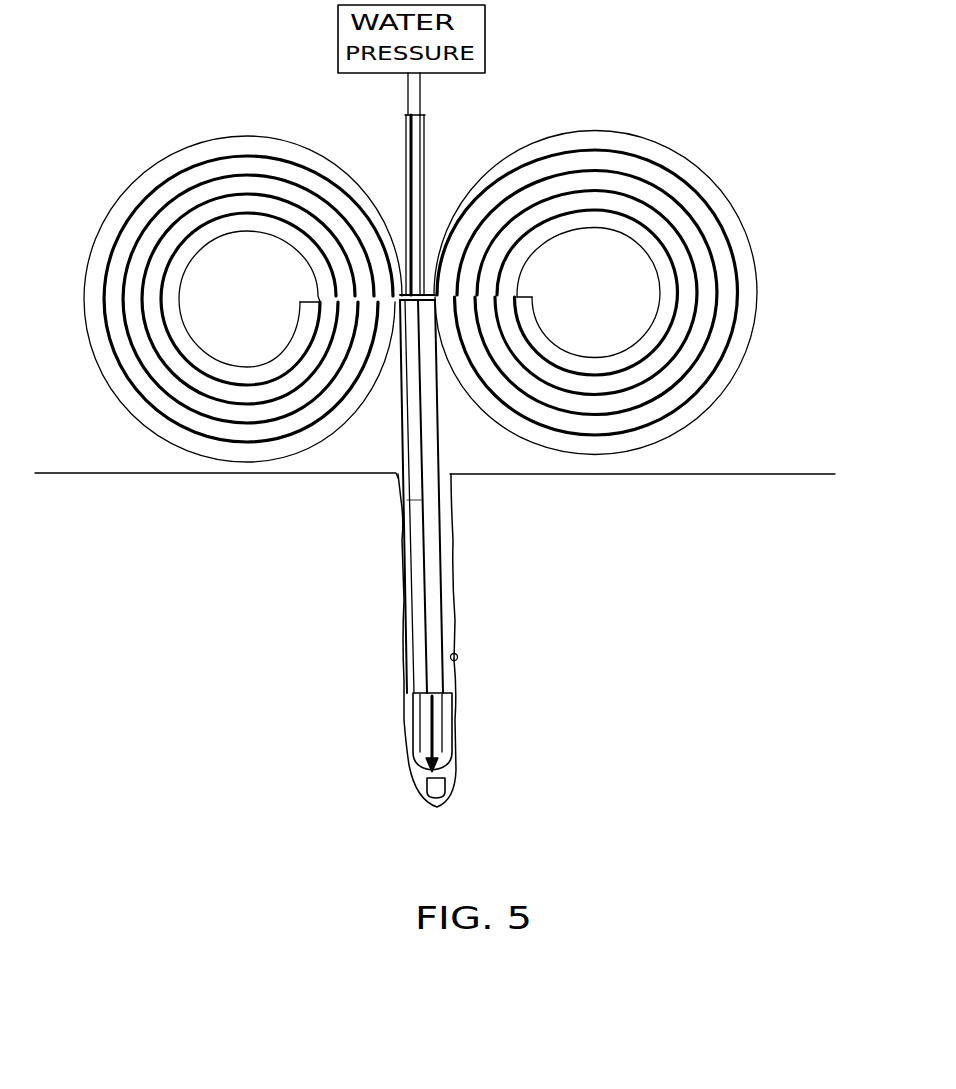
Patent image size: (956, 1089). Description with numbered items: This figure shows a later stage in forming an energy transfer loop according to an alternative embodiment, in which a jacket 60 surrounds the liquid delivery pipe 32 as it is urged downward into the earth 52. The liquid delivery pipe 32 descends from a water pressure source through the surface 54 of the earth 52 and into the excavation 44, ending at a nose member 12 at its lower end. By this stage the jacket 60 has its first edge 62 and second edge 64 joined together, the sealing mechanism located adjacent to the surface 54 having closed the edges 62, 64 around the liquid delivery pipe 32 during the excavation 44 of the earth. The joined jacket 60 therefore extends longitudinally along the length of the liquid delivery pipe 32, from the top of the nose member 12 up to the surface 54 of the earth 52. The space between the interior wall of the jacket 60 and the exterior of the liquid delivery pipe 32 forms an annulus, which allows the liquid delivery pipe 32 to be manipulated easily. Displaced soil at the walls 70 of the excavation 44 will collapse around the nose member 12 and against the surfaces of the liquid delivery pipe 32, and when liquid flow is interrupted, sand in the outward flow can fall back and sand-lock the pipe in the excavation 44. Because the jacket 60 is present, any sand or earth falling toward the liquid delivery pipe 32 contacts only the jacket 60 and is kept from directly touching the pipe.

The nose member 12 is at (440, 745).
The liquid delivery pipe 32 is at (421, 97).
The excavation 44 is at (450, 628).
The earth 52 is at (624, 531).
The surface 54 is at (760, 473).
The jacket 60 is at (440, 543).
The first edge 62 is at (422, 502).
The second edge 64 is at (423, 447).
The walls 70 is at (458, 666).